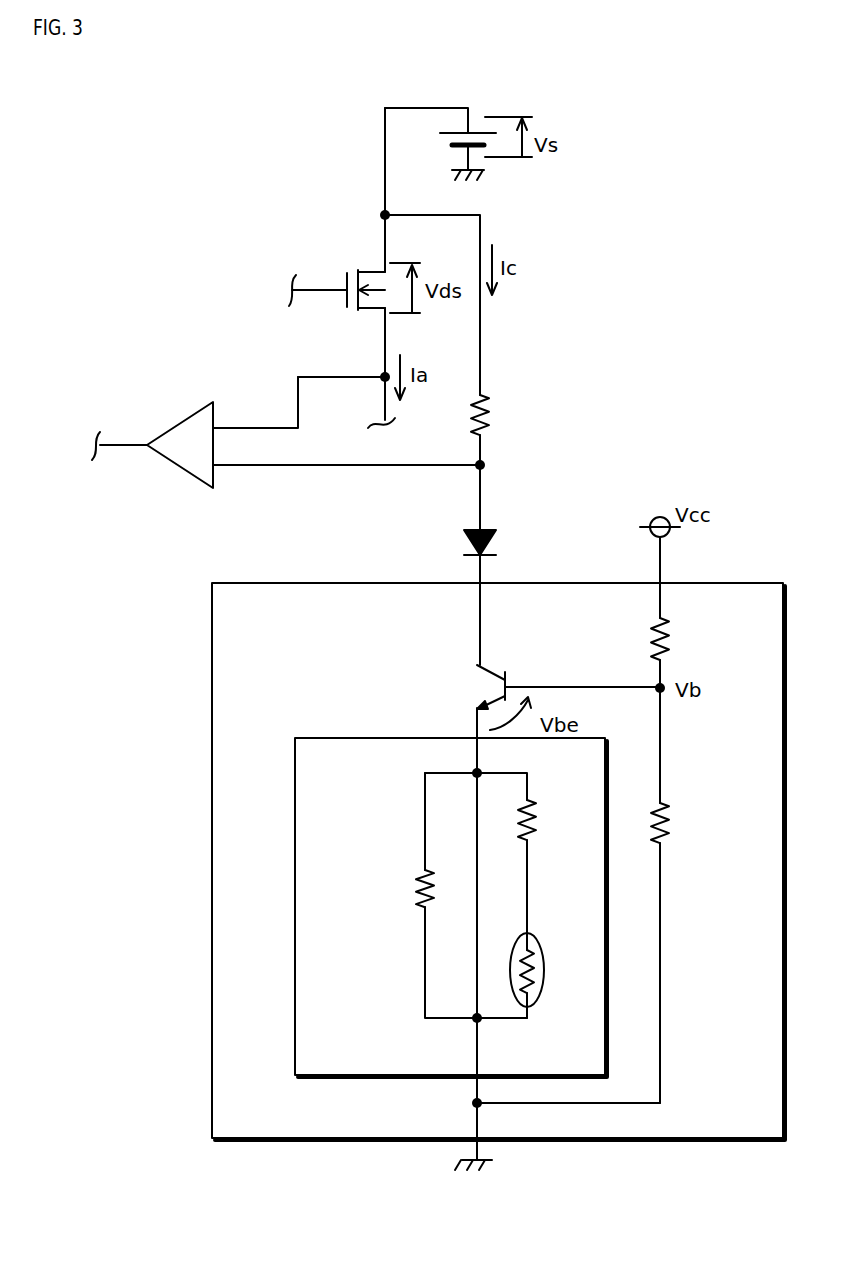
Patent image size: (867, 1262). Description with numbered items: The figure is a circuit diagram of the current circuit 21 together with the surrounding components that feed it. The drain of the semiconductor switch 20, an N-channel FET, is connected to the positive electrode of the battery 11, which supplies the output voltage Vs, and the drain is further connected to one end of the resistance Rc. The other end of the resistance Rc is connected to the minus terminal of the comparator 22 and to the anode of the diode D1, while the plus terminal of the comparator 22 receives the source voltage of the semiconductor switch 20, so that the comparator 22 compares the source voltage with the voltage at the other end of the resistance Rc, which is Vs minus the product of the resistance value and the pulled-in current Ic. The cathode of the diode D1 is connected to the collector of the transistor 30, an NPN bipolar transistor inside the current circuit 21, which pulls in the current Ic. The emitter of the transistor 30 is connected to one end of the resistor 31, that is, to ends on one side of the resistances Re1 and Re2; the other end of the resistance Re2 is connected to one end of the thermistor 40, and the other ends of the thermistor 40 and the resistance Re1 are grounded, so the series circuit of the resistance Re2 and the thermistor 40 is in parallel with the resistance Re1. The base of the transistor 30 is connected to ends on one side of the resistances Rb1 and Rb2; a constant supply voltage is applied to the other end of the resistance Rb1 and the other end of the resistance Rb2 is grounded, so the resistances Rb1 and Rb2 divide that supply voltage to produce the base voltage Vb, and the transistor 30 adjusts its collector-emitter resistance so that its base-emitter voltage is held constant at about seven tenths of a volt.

The battery 11 is at (445, 142).
The semiconductor switch 20 is at (352, 263).
The current circuit 21 is at (297, 582).
The comparator 22 is at (170, 430).
The transistor 30 is at (495, 662).
The resistor 31 is at (352, 737).
The thermistor 40 is at (540, 942).
The resistance Rc is at (490, 406).
The diode D1 is at (485, 526).
The resistance Re1 is at (420, 884).
The resistance Re2 is at (530, 806).
The resistance Rb1 is at (670, 642).
The resistance Rb2 is at (670, 812).